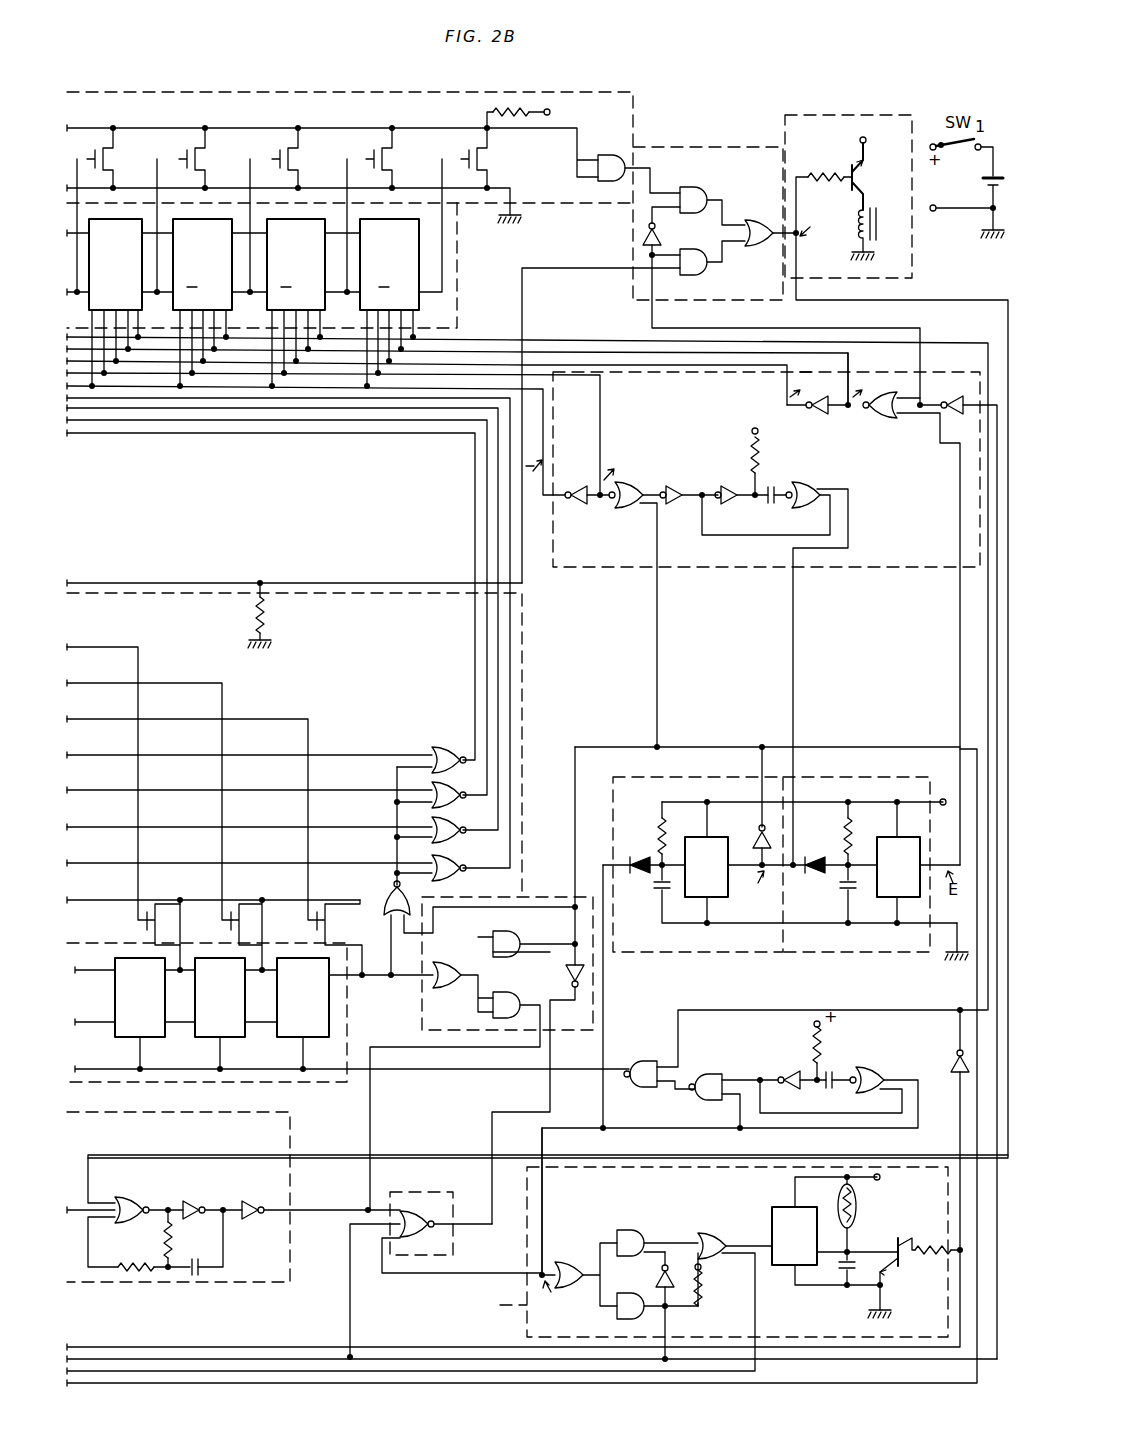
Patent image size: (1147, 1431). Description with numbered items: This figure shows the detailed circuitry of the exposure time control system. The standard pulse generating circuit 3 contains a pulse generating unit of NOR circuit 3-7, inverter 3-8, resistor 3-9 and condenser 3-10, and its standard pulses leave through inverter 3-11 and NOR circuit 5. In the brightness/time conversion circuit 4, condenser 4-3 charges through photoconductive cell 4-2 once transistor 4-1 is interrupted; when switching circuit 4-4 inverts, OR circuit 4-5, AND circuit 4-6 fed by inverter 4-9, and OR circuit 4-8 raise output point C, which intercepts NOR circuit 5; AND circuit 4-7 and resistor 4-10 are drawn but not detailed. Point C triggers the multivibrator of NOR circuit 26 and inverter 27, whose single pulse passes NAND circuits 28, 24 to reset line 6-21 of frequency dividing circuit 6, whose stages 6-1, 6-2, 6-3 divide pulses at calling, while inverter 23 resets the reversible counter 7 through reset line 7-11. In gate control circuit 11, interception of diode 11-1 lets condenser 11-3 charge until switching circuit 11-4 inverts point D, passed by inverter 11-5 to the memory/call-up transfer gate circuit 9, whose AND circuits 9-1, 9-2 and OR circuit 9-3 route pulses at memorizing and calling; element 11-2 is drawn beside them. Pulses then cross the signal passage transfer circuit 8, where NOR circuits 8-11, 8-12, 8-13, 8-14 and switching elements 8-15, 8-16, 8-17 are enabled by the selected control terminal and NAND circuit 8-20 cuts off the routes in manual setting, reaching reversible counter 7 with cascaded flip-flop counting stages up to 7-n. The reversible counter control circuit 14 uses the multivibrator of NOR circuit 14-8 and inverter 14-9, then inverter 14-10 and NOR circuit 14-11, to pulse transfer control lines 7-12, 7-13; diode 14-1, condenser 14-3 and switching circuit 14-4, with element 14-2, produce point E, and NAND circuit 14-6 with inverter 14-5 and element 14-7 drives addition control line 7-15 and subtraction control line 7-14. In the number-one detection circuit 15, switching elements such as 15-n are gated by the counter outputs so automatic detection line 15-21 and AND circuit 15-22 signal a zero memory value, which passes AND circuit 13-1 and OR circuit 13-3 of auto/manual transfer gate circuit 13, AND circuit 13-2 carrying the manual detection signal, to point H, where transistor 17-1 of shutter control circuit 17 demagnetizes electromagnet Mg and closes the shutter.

The No. 1 detection circuit 15 is at (373, 182).
The automatic detection line 15-21 is at (405, 112).
The switching element 15-n is at (494, 162).
The AND circuit 15-22 is at (606, 154).
The reversible counter 7 is at (527, 606).
The flip-flop counting stage 7-n is at (389, 264).
The reset line 7-11 is at (482, 342).
The transfer control line 7-12 is at (601, 412).
The transfer control line 7-13 is at (543, 506).
The subtraction control line 7-14 is at (808, 396).
The addition control line 7-15 is at (858, 358).
The auto/manual transfer gate circuit 13 is at (721, 350).
The AND circuit 13-1 is at (694, 187).
The AND circuit 13-2 is at (694, 272).
The OR circuit 13-3 is at (756, 214).
The shutter control circuit 17 is at (548, 621).
The transistor 17-1 is at (858, 180).
The reversible counter control circuit 14 is at (610, 570).
The inverter 14-5 is at (956, 378).
The NAND circuit 14-6 is at (876, 420).
The inverter 14-7 is at (824, 417).
The NOR circuit 14-8 is at (805, 486).
The inverter 14-9 is at (728, 486).
The inverter 14-10 is at (680, 508).
The NOR circuit 14-11 is at (620, 508).
The diode 14-1 is at (830, 870).
The resistor 14-2 is at (842, 832).
The condenser 14-3 is at (840, 895).
The switching circuit 14-4 is at (884, 782).
The signal passage transfer circuit 8 is at (522, 633).
The NOR circuit 8-11 is at (455, 876).
The NOR circuit 8-12 is at (452, 840).
The NOR circuit 8-13 is at (447, 805).
The NOR circuit 8-14 is at (440, 750).
The switching element 8-15 is at (312, 910).
The switching element 8-16 is at (231, 906).
The switching element 8-17 is at (145, 906).
The NAND circuit 8-20 is at (390, 900).
The frequency dividing circuit 6 is at (348, 1012).
The frequency dividing stage 6-1 is at (355, 1013).
The frequency dividing stage 6-2 is at (220, 1013).
The frequency dividing stage 6-3 is at (140, 1013).
The reset line 6-21 is at (398, 1075).
The memory/call-up transfer gate circuit 9 is at (476, 985).
The AND circuit 9-1 is at (508, 935).
The AND circuit 9-2 is at (499, 1000).
The OR circuit 9-3 is at (447, 963).
The gate control circuit 11 is at (767, 936).
The diode 11-1 is at (640, 872).
The resistor 11-2 is at (656, 826).
The condenser 11-3 is at (658, 905).
The switching circuit 11-4 is at (723, 862).
The inverter 11-5 is at (758, 838).
The NAND circuit 24 is at (635, 1064).
The NOR circuit 26 is at (875, 1060).
The inverter 27 is at (786, 1072).
The NAND circuit 28 is at (702, 1100).
The inverter 23 is at (952, 1062).
The standard pulse generating circuit 3 is at (537, 1214).
The NOR circuit 3-7 is at (133, 1194).
The inverter 3-8 is at (195, 1196).
The resistor 3-9 is at (156, 1246).
The condenser 3-10 is at (196, 1262).
The inverter 3-11 is at (254, 1222).
The NOR circuit 5 is at (420, 1196).
The brightness/time conversion circuit 4 is at (515, 1251).
The transistor 4-1 is at (893, 1280).
The photoconductive cell 4-2 is at (858, 1218).
The condenser 4-3 is at (840, 1268).
The switching circuit 4-4 is at (835, 1231).
The OR circuit 4-5 is at (708, 1236).
The AND circuit 4-6 is at (628, 1232).
The AND gate 4-7 is at (622, 1318).
The OR circuit 4-8 is at (564, 1266).
The inverter 4-9 is at (660, 1278).
The resistor 4-10 is at (704, 1298).